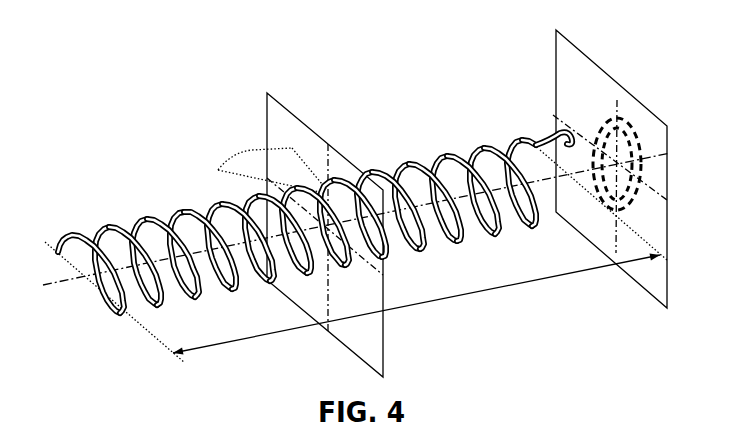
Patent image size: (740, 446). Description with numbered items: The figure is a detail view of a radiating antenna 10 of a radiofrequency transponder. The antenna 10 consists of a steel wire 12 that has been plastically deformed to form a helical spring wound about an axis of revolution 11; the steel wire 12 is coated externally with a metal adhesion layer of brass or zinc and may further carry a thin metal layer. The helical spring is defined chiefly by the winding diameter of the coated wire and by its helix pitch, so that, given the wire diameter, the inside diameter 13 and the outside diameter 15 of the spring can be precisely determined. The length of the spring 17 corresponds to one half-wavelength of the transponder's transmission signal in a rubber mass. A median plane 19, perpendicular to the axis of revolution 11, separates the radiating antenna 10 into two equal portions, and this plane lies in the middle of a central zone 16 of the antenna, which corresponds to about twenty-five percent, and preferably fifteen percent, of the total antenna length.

The radiating antenna 10 is at (332, 185).
The axis of revolution 11 is at (68, 287).
The steel wire 12 is at (198, 210).
The inside diameter 13 is at (607, 130).
The outside diameter 15 is at (615, 117).
The central zone 16 is at (245, 150).
The length of the spring 17 is at (540, 283).
The median plane 19 is at (383, 353).